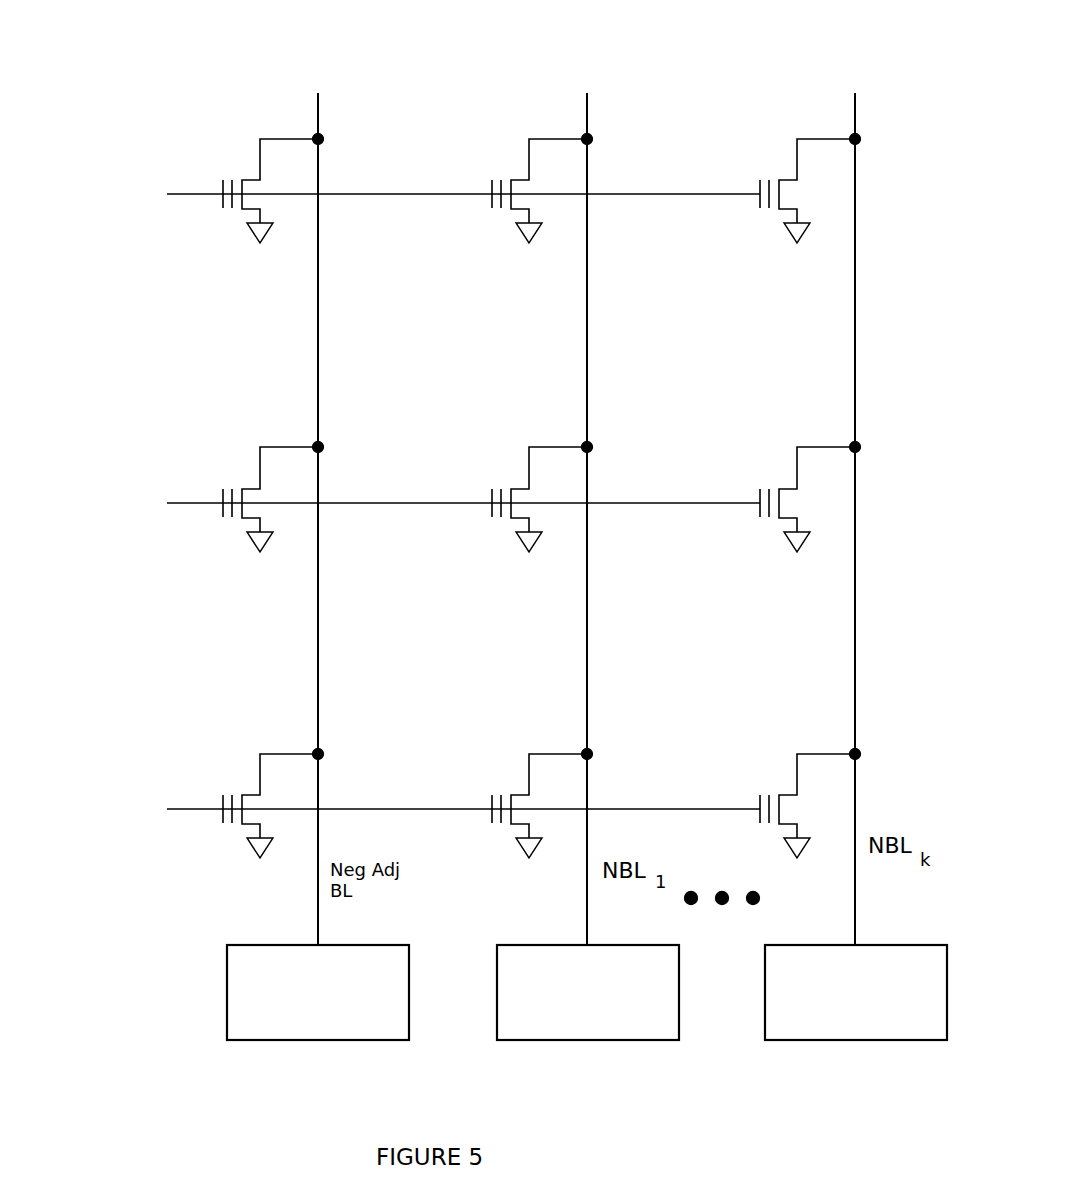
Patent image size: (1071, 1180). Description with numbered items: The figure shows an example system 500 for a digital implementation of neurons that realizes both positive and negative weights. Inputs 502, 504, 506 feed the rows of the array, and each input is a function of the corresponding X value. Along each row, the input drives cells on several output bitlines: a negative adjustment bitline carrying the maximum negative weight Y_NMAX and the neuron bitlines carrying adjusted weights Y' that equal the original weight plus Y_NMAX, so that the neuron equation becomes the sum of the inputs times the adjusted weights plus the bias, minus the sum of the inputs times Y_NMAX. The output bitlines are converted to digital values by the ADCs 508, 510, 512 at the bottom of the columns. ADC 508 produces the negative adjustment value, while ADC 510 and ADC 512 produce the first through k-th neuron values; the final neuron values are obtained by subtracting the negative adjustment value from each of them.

The system 500 is at (130, 62).
The input 502 is at (98, 237).
The input 504 is at (97, 550).
The input 506 is at (97, 856).
The ADC 508 is at (312, 1070).
The ADC 510 is at (573, 1067).
The ADC 512 is at (863, 1067).